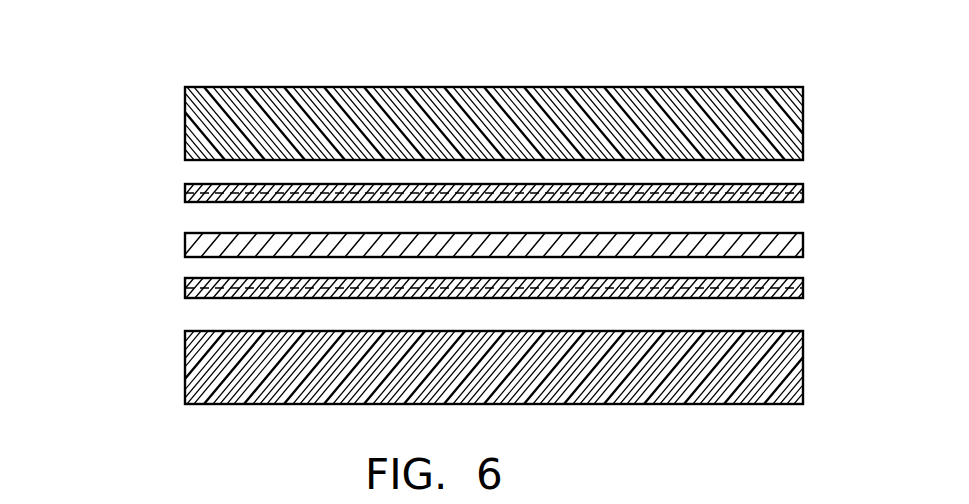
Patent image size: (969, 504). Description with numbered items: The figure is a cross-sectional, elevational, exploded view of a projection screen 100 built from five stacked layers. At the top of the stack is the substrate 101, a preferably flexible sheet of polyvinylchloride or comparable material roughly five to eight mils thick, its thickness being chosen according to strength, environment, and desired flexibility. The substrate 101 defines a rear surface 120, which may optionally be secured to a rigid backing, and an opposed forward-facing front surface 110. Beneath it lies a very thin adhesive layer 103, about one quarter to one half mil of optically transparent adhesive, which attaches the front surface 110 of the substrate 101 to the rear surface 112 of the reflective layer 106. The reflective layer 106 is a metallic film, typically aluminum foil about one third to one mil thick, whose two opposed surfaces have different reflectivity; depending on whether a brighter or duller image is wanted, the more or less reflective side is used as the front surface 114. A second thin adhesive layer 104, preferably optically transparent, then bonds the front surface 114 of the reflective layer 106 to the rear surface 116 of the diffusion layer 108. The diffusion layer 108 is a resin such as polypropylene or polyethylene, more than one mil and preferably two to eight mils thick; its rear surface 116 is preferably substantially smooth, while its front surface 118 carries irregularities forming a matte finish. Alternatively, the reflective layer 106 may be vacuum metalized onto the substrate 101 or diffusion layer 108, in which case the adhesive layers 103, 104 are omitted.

The projection screen 100 is at (878, 44).
The substrate 101 is at (185, 114).
The rear surface 120 is at (487, 87).
The front surface 110 is at (787, 162).
The adhesive layer 103 is at (803, 190).
The reflective layer 106 is at (185, 238).
The rear surface 112 is at (790, 234).
The front surface 114 is at (187, 256).
The adhesive layer 104 is at (185, 297).
The rear surface 116 is at (207, 331).
The diffusion layer 108 is at (803, 367).
The front surface 118 is at (762, 405).